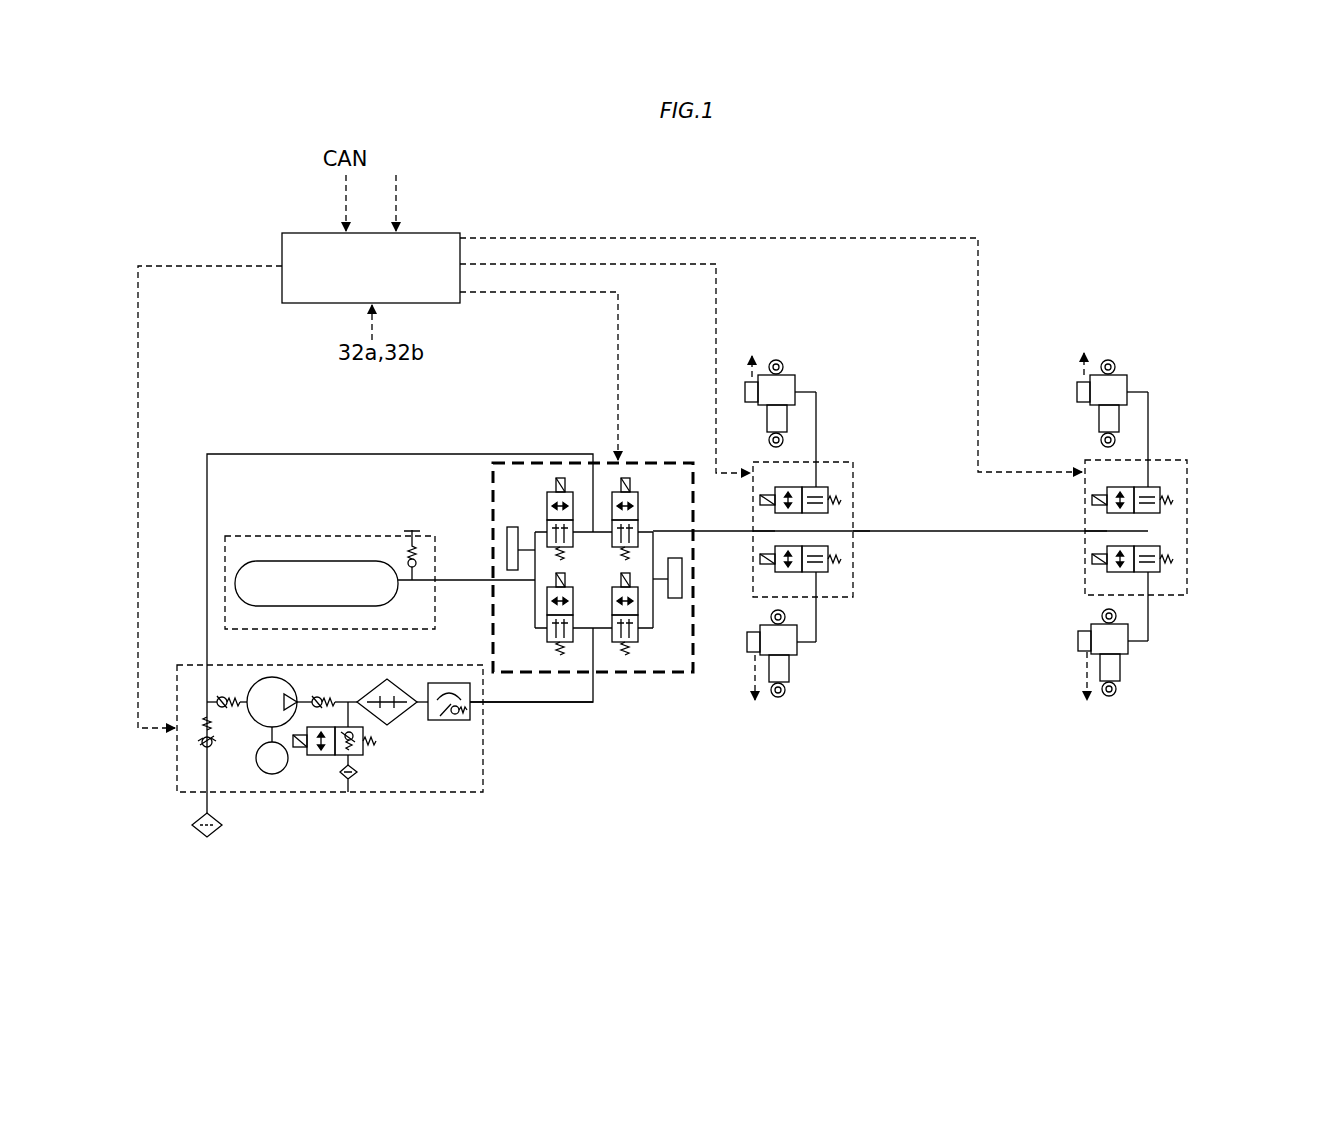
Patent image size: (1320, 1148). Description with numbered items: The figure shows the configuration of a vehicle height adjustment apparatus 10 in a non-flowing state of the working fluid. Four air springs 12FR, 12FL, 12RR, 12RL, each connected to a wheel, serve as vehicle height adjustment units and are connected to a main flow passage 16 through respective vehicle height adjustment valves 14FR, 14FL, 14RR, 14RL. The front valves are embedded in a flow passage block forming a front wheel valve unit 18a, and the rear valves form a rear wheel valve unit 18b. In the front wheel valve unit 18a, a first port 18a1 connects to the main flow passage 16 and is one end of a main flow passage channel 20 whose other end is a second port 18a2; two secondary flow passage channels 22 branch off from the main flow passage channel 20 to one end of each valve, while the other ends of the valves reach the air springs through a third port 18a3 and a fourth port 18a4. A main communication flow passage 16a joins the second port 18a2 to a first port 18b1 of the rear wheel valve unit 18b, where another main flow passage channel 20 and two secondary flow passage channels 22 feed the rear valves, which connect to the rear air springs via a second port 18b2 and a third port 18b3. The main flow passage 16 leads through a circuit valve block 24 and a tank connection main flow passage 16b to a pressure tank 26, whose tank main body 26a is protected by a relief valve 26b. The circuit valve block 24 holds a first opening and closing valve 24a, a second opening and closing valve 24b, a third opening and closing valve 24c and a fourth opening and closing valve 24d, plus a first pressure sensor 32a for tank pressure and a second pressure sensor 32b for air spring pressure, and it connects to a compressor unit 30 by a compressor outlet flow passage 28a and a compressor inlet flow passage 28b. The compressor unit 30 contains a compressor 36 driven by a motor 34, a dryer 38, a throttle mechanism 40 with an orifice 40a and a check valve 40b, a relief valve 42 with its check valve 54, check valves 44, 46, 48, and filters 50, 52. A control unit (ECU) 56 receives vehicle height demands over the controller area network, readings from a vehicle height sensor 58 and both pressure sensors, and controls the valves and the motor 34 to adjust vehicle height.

The vehicle height adjustment apparatus 10 is at (703, 842).
The air spring 12FR is at (790, 368).
The air spring 12FL is at (790, 670).
The air spring 12RR is at (1122, 368).
The air spring 12RL is at (1123, 668).
The vehicle height adjustment valve 14FR is at (823, 487).
The vehicle height adjustment valve 14FL is at (830, 572).
The vehicle height adjustment valve 14RR is at (1155, 487).
The vehicle height adjustment valve 14RL is at (1163, 570).
The main flow passage 16 is at (716, 534).
The main communication flow passage 16a is at (1012, 533).
The tank connection main flow passage 16b is at (450, 578).
The front wheel valve unit 18a is at (855, 597).
The first port 18a1 is at (752, 530).
The second port 18a2 is at (863, 530).
The third port 18a3 is at (818, 460).
The fourth port 18a4 is at (822, 600).
The rear wheel valve unit 18b is at (1187, 595).
The first port 18b1 is at (1085, 530).
The second port 18b2 is at (1150, 468).
The third port 18b3 is at (1152, 600).
The main flow passage channel 20 is at (756, 540).
The secondary flow passage channel 22 is at (843, 500).
The circuit valve block 24 is at (627, 675).
The first opening and closing valve 24a is at (562, 463).
The second opening and closing valve 24b is at (572, 672).
The third opening and closing valve 24c is at (640, 672).
The fourth opening and closing valve 24d is at (640, 463).
The pressure tank 26 is at (280, 533).
The tank main body 26a is at (305, 561).
The relief valve 26b is at (405, 555).
The compressor outlet flow passage 28a is at (532, 703).
The compressor inlet flow passage 28b is at (345, 454).
The compressor unit 30 is at (405, 796).
The first pressure sensor 32a is at (512, 527).
The second pressure sensor 32b is at (675, 598).
The motor 34 is at (275, 775).
The compressor 36 is at (260, 726).
The dryer 38 is at (405, 720).
The throttle mechanism 40 is at (452, 724).
The orifice 40a is at (450, 682).
The check valve 40b is at (458, 722).
The relief valve 42 is at (328, 757).
The check valve 44 is at (325, 694).
The check valve 46 is at (212, 695).
The check valve 48 is at (198, 745).
The filter 50 is at (358, 757).
The filter 52 is at (212, 840).
The check valve 54 is at (357, 778).
The control unit (ECU) 56 is at (432, 233).
The vehicle height sensor 58 is at (1080, 640).